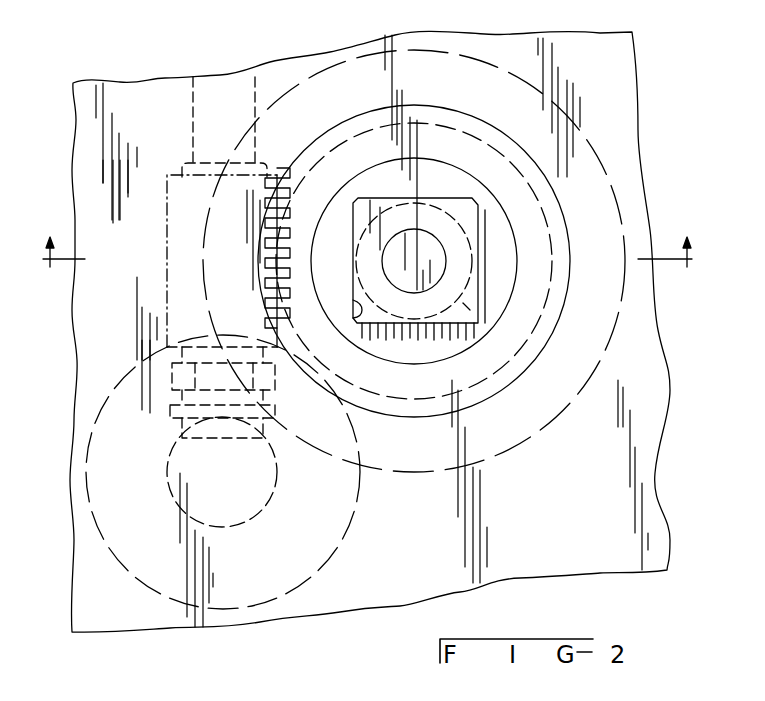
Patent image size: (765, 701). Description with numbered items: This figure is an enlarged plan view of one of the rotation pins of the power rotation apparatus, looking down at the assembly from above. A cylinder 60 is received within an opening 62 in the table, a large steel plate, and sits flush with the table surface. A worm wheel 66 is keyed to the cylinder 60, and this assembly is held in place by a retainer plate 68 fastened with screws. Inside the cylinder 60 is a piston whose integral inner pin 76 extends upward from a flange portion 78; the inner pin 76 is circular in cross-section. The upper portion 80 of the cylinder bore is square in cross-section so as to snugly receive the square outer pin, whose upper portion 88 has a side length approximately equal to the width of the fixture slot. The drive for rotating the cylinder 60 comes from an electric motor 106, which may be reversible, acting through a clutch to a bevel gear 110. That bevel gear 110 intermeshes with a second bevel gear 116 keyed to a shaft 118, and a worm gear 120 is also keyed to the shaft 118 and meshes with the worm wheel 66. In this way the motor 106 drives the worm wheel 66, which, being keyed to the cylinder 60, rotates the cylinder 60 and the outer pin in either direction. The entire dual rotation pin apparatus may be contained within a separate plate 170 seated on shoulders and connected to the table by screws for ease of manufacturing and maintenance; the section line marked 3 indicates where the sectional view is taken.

The separate plate 170 is at (600, 48).
The retainer plate 68 is at (456, 50).
The worm wheel 66 is at (370, 113).
The opening 62 is at (380, 354).
The cylinder 60 is at (493, 257).
The inner pin portion 76 is at (412, 233).
The upper portion 88 is at (467, 207).
The flange portion 78 is at (478, 323).
The upper portion of bore 80 is at (355, 322).
The shaft 118 is at (193, 145).
The worm gear 120 is at (167, 278).
The electric motor 106 is at (100, 393).
The bevel gear 110 is at (222, 528).
The second bevel gear 116 is at (178, 430).
The section line 3- 3 is at (367, 241).